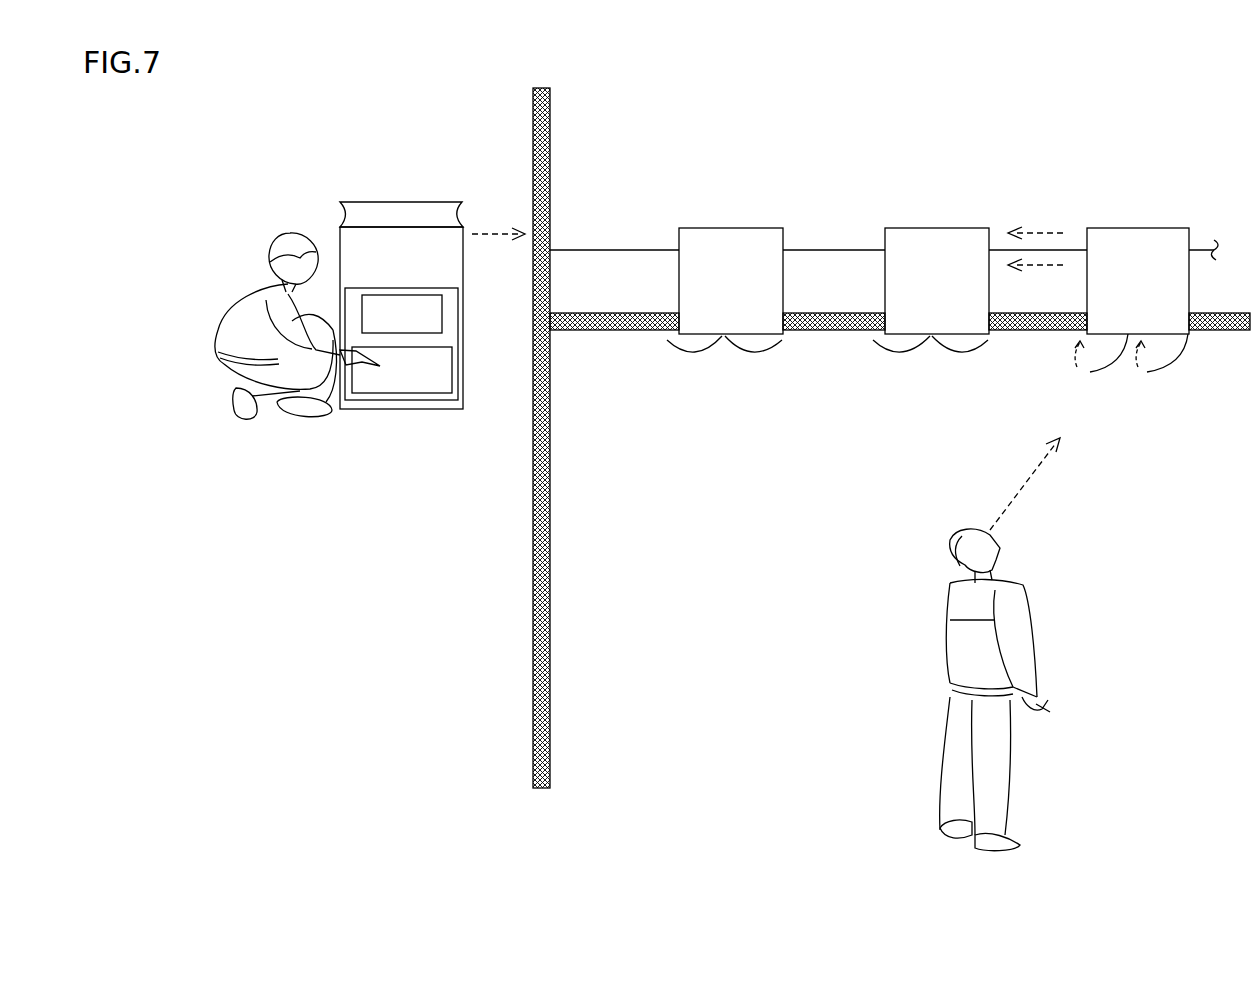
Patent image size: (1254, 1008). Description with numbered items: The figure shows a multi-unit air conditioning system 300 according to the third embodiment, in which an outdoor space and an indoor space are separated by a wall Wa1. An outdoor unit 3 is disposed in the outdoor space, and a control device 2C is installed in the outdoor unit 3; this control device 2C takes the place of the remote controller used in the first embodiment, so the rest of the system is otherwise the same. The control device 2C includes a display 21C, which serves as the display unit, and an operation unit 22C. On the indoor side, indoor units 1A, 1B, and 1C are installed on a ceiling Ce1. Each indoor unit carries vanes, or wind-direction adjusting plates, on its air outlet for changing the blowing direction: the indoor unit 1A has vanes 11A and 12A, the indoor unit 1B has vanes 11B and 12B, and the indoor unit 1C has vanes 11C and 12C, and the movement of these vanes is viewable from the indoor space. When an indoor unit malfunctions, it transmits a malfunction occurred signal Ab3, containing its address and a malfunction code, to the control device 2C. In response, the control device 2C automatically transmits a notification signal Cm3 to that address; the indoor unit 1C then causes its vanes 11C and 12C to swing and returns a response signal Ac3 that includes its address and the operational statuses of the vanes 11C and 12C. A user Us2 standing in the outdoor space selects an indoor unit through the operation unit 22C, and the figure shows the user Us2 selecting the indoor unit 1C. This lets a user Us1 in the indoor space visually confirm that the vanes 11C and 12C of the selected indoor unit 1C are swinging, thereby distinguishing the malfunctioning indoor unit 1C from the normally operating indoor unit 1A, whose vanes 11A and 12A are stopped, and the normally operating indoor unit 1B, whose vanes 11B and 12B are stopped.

The multi-unit air conditioning system 300 is at (378, 88).
The outdoor unit 3 is at (398, 200).
The control device 2C is at (419, 410).
The display 21C is at (458, 313).
The operation unit 22C is at (458, 370).
The notification signal Cm3 is at (485, 232).
The indoor unit 1A is at (742, 228).
The indoor unit 1B is at (947, 228).
The indoor unit 1C is at (1147, 228).
The vane 11A is at (708, 352).
The vane 12A is at (762, 352).
The vane 11B is at (914, 352).
The vane 12B is at (968, 352).
The vane 11C is at (1105, 374).
The vane 12C is at (1162, 374).
The malfunction occurred signal Ab3 is at (1040, 232).
The response signal Ac3 is at (1048, 267).
The ceiling Ce1 is at (1225, 332).
The wall Wa1 is at (533, 735).
The user Us1 is at (1028, 610).
The user Us2 is at (232, 300).